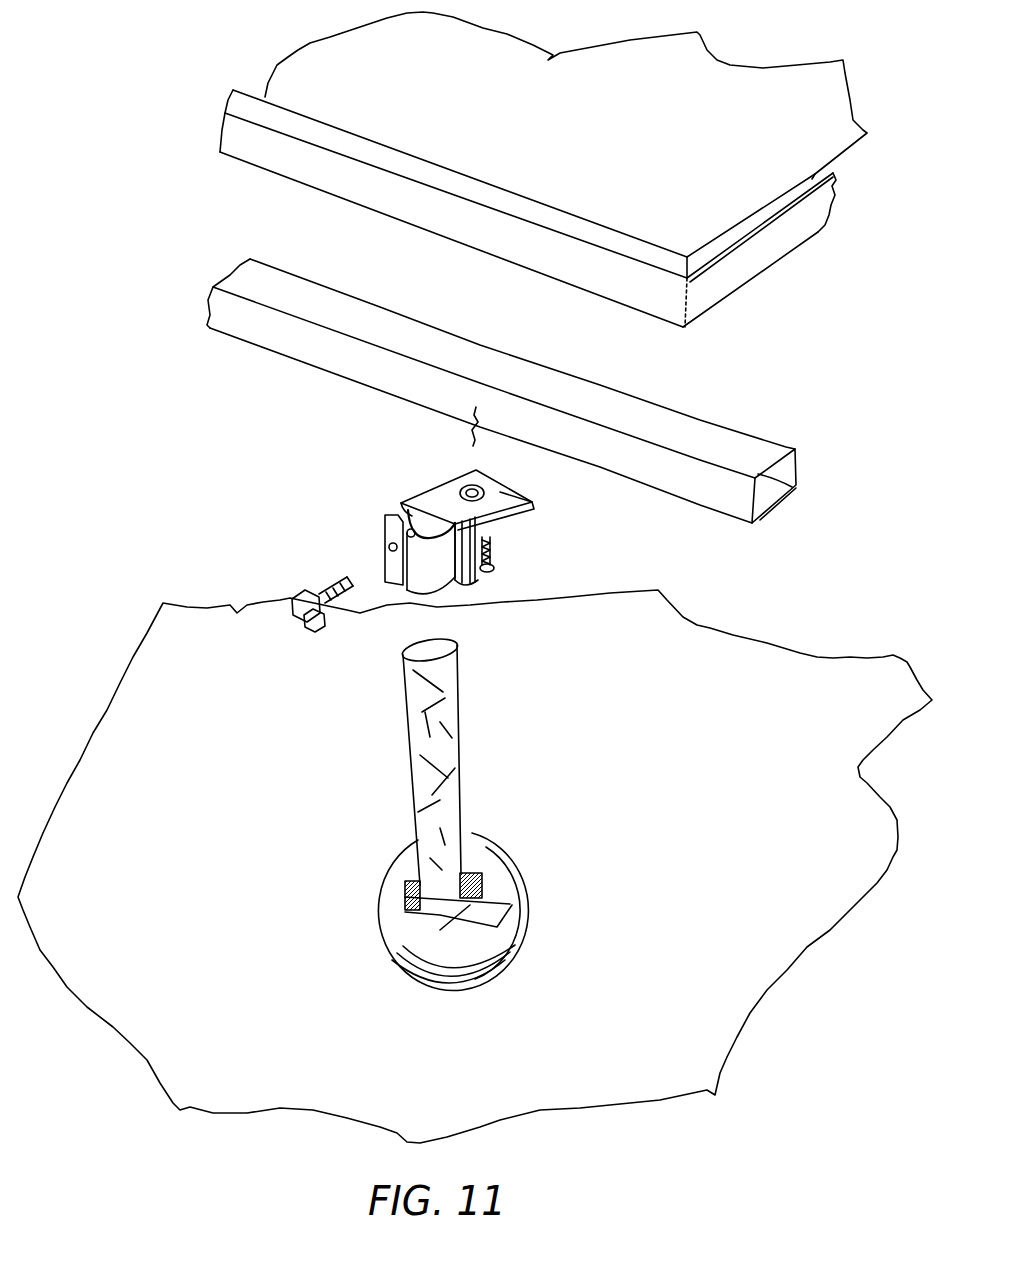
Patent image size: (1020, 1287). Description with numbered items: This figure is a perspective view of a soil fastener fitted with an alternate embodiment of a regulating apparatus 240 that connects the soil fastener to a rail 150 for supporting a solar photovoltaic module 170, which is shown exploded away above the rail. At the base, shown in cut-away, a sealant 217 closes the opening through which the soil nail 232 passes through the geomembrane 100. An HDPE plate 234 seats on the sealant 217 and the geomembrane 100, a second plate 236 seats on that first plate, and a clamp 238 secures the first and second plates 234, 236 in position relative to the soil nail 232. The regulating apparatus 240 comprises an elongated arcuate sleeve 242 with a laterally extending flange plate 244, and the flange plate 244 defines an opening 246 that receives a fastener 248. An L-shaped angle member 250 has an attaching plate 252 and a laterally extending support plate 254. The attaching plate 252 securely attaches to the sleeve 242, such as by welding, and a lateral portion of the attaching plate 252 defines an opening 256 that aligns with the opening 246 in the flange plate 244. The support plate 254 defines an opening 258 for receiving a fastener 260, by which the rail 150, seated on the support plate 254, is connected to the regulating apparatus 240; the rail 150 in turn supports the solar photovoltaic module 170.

The geomembrane 100 is at (702, 861).
The rail 150 is at (617, 413).
The solar photovoltaic module 170 is at (587, 190).
The sealant 217 is at (505, 909).
The soil nail 232 is at (448, 793).
The HDPE plate 234 is at (505, 955).
The second plate 236 is at (487, 865).
The clamp 238 is at (402, 896).
The regulating apparatus 240 is at (357, 479).
The elongated arcuate sleeve 242 is at (437, 570).
The flange plate 244 is at (394, 533).
The opening 246 is at (386, 546).
The fastener 248 is at (290, 598).
The L-shaped angle member 250 is at (525, 510).
The attaching plate 252 is at (500, 578).
The support plate 254 is at (500, 493).
The opening 256 is at (412, 512).
The opening 258 is at (479, 486).
The fastener 260 is at (495, 553).